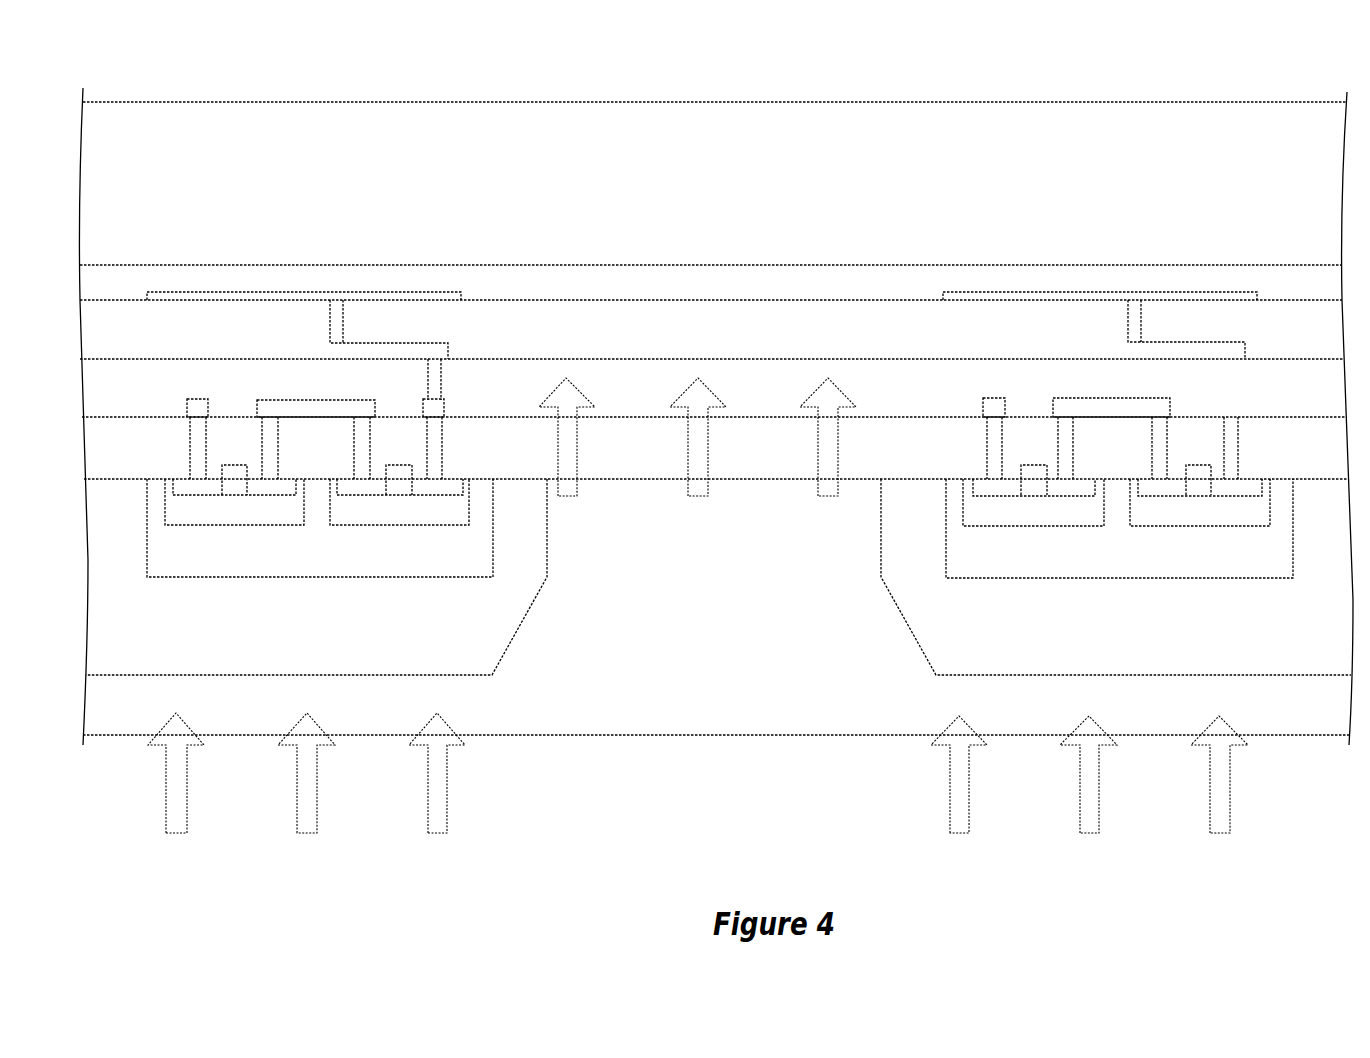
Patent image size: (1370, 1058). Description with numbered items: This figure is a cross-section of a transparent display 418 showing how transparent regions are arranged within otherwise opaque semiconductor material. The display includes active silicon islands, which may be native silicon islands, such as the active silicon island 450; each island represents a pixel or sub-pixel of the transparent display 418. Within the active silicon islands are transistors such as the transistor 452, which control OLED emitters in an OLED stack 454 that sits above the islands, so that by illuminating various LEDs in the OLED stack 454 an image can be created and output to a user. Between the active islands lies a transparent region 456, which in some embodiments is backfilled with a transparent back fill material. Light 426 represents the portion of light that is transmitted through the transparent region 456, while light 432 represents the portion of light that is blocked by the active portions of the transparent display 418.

The transparent display 418 is at (1314, 65).
The OLED stack 454 is at (713, 295).
The light 426 is at (840, 399).
The transistor 452 is at (248, 516).
The active silicon island 450 is at (293, 618).
The transparent region 456 is at (730, 590).
The light 432 is at (435, 790).